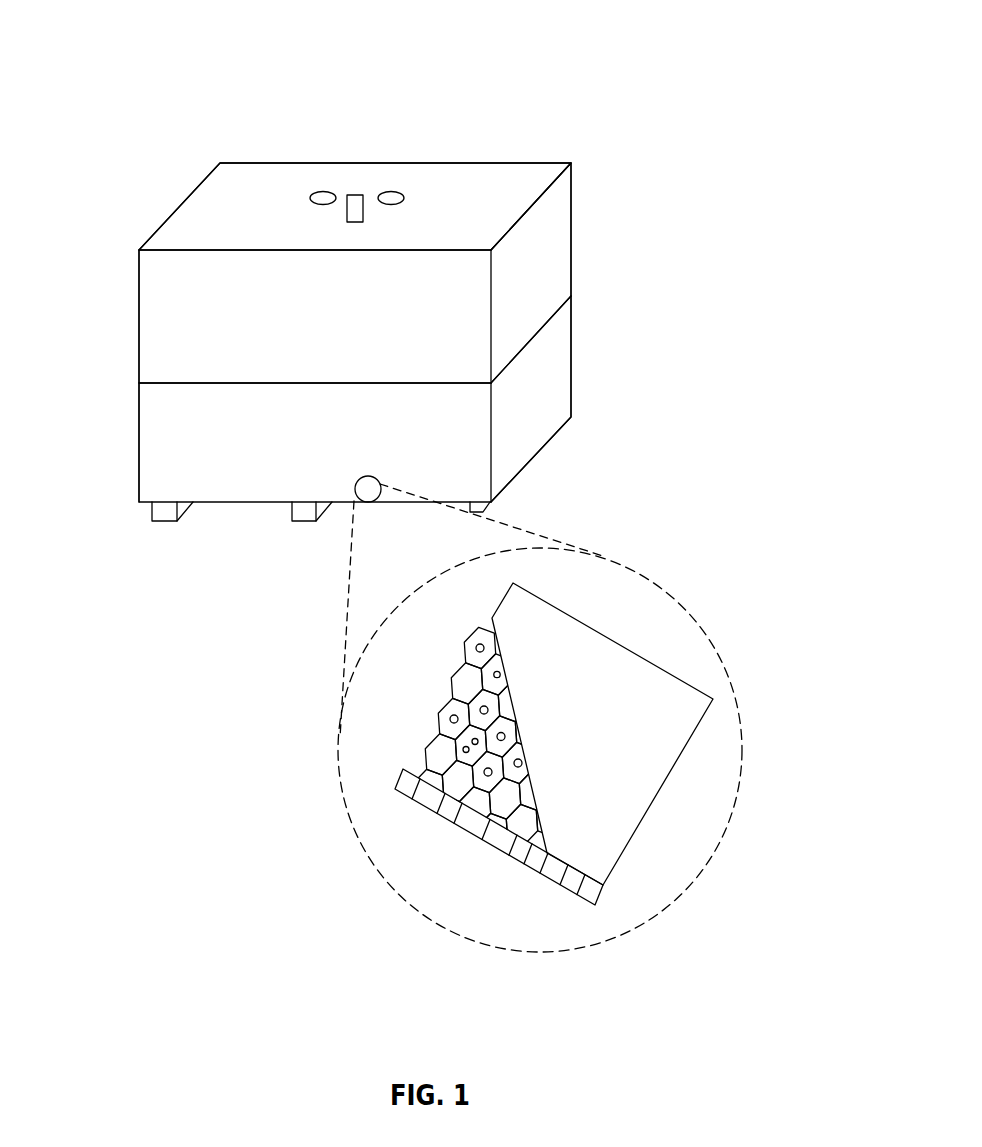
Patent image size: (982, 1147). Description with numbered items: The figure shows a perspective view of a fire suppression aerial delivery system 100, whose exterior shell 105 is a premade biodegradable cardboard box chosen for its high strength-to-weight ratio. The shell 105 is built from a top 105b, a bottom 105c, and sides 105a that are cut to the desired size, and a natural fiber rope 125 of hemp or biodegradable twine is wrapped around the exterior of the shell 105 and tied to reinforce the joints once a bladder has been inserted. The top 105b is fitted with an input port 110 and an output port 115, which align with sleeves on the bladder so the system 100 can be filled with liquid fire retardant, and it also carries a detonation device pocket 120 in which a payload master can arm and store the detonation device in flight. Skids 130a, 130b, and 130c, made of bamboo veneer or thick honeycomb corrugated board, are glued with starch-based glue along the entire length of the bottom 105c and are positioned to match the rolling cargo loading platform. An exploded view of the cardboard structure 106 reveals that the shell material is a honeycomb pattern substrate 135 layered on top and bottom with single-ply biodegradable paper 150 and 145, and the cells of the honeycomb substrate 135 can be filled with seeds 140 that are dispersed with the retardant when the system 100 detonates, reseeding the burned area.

The fire suppression aerial delivery system 100 is at (550, 42).
The exterior shell 105 is at (589, 115).
The sides of exterior shell 105a is at (543, 217).
The top of exterior shell 105b is at (493, 172).
The bottom of exterior shell 105c is at (139, 447).
The cardboard structure 106 is at (735, 697).
The input port 110 is at (312, 192).
The output port 115 is at (400, 192).
The detonation device pocket 120 is at (346, 214).
The natural fiber rope 125 is at (543, 330).
The skid 130a is at (167, 523).
The skid 130b is at (305, 523).
The skid 130c is at (482, 507).
The honeycomb pattern substrate 135 is at (468, 681).
The seeds 140 is at (453, 722).
The bottom paper layer 145 is at (402, 792).
The top paper layer 150 is at (580, 633).